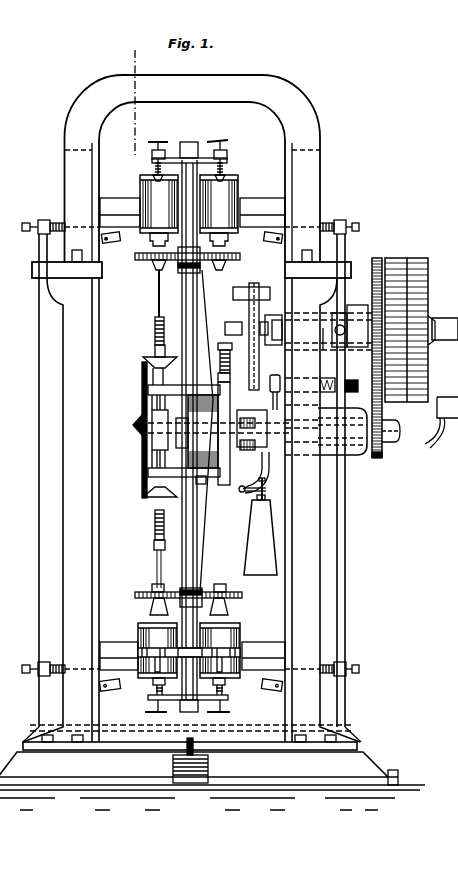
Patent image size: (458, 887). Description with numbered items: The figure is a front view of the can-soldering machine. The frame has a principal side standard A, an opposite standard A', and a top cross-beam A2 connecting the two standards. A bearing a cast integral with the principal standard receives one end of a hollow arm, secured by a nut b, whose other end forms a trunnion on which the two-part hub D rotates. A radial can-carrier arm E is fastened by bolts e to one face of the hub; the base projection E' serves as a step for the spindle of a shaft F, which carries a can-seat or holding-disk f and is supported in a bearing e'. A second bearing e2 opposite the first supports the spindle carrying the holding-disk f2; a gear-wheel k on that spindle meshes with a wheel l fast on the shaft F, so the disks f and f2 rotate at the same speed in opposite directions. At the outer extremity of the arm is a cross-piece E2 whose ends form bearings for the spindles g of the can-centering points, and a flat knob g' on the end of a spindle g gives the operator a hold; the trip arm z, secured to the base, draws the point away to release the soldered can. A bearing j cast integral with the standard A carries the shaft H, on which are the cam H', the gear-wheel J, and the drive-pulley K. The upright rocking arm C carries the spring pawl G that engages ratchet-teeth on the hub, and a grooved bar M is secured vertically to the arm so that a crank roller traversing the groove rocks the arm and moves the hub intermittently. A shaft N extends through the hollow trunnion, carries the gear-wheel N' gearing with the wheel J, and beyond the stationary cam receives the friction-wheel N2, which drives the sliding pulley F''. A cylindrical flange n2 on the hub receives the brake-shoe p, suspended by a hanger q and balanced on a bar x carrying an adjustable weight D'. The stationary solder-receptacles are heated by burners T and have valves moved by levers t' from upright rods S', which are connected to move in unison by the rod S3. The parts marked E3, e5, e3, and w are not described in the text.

The top cross-beam A2 is at (191, 176).
The opposite side standard A' is at (61, 488).
The principal side standard A is at (212, 522).
The upright rod S' is at (190, 500).
The connecting rod S3 is at (104, 738).
The burner or blow-pipe T is at (190, 471).
The valve arm or lever t' is at (188, 451).
The trip arm z is at (174, 756).
The radial can-carrier arm E is at (200, 430).
The cross-piece E2 is at (176, 157).
The gear wheel E3 is at (190, 266).
The projection of arm base E' is at (171, 395).
The central block e5 is at (190, 148).
The shaft bearing e' is at (152, 198).
The second bearing e2 is at (224, 242).
The lower block e3 is at (189, 715).
The bolts e is at (201, 488).
The flat knob or circular plate g' is at (227, 156).
The spindles of can-centering points g is at (189, 695).
The shaft F is at (152, 429).
The sliding pulley F'' is at (157, 453).
The shaft N is at (129, 426).
The friction-wheel N2 is at (143, 474).
The gear-wheel N' is at (387, 464).
The hub D is at (219, 431).
The weight D' is at (260, 535).
The cylindrical flange n2 is at (230, 462).
The hanger q is at (261, 472).
The brake-shoe p is at (242, 493).
The bar x is at (268, 491).
The upright rocking arm C is at (248, 310).
The grooved bar M is at (254, 287).
The spring latch or pawl G is at (220, 378).
The cam H' is at (328, 319).
The shaft H is at (443, 322).
The bearing j is at (321, 360).
The bearing a is at (326, 431).
The nut b is at (360, 455).
The gear-wheel J is at (372, 349).
The drive-pulley K is at (406, 321).
The bracket w is at (441, 428).
The wheel l is at (152, 596).
The gear-wheel k is at (222, 594).
The can-seat or holding-disk f is at (158, 622).
The can-seat or holding-disk f2 is at (224, 622).